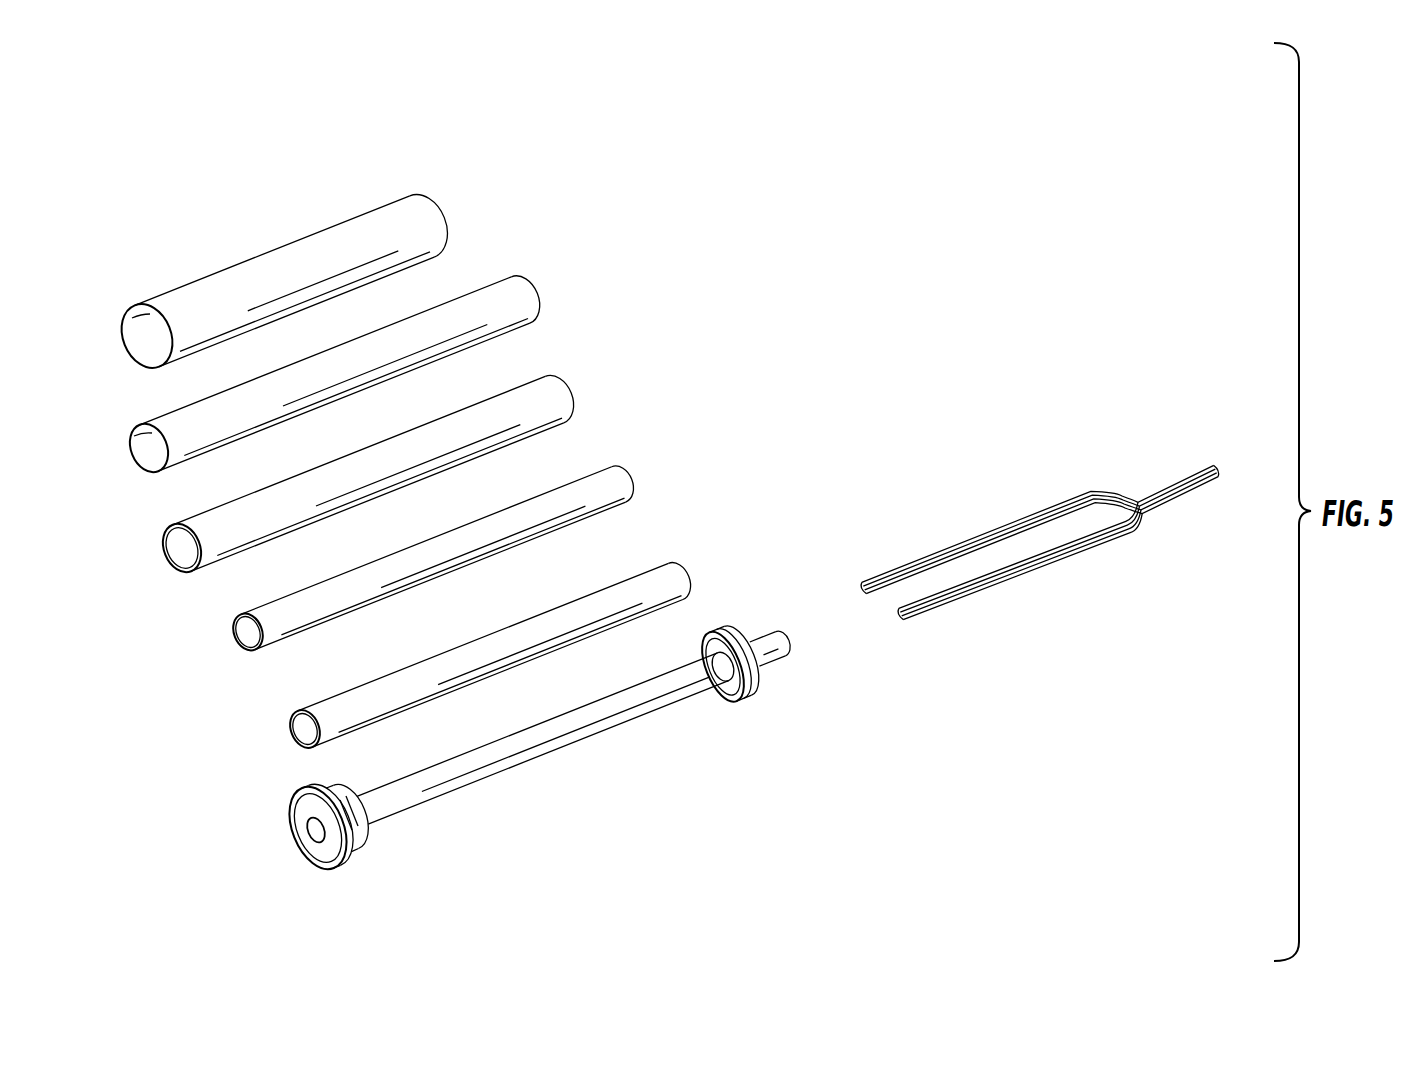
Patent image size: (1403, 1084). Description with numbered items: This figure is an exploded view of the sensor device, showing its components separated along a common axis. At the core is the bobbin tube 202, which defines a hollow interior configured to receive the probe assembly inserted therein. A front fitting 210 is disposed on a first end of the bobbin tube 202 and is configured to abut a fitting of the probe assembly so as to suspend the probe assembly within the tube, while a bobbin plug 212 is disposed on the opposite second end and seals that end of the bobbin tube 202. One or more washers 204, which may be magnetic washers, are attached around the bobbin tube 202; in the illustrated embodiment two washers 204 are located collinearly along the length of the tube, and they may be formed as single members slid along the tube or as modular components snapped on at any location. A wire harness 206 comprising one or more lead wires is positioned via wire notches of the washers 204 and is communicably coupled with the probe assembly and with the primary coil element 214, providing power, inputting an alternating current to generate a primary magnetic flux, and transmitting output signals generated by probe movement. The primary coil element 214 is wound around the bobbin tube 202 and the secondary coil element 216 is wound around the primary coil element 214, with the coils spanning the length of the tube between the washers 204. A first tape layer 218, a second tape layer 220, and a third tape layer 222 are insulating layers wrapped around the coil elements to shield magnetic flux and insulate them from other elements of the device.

The bobbin tube 202 is at (439, 794).
The washers 204 is at (350, 780).
The wire harness 206 is at (1229, 454).
The front fitting 210 is at (288, 820).
The bobbin plug 212 is at (782, 629).
The primary coil element 214 is at (288, 729).
The secondary coil element 216 is at (161, 548).
The first tape layer 218 is at (632, 472).
The second tape layer 220 is at (534, 283).
The third tape layer 222 is at (444, 216).